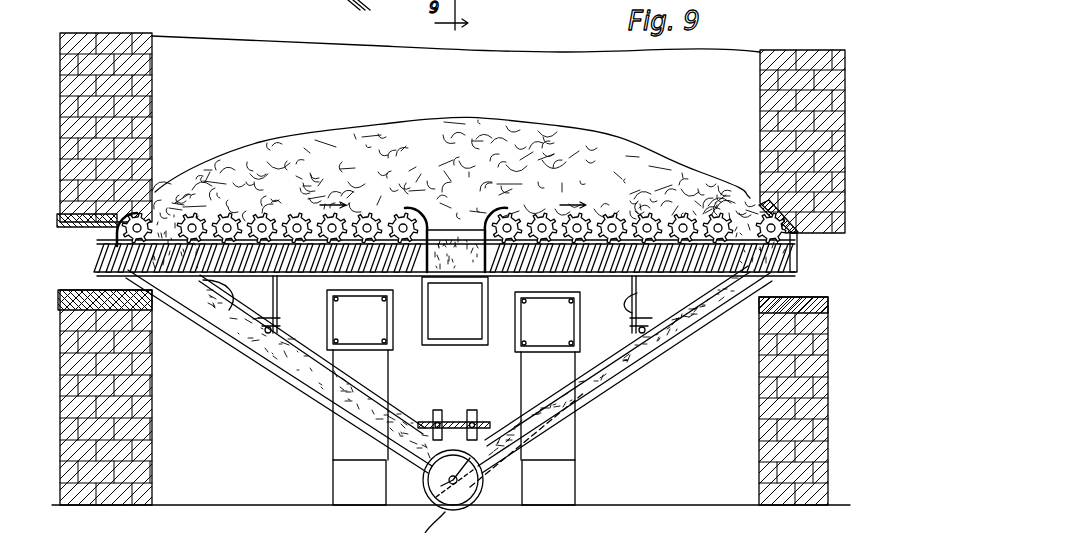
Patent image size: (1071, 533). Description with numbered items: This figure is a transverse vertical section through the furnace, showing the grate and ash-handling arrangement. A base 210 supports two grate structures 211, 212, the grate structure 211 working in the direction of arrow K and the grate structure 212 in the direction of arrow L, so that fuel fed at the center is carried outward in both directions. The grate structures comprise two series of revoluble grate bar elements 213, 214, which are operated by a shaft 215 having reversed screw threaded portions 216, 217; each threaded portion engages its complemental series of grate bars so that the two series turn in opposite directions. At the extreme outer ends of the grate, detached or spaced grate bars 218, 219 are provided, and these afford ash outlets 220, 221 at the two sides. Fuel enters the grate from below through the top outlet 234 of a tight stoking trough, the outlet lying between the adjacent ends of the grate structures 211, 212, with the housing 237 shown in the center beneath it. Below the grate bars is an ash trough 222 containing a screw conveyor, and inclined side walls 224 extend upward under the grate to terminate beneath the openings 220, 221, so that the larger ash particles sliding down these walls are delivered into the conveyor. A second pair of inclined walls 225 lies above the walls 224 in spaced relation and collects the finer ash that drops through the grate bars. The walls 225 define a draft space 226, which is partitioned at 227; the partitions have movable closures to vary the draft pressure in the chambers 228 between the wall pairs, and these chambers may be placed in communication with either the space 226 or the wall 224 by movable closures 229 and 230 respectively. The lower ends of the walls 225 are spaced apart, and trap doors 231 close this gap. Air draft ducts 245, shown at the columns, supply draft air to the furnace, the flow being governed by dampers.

The base 210 is at (787, 383).
The grate structure 211 is at (276, 225).
The grate structure 212 is at (563, 228).
The series of grate bar elements 213 is at (228, 215).
The series of grate bar elements 214 is at (660, 232).
The shaft 215 is at (456, 240).
The reversed screw threaded portion 216 is at (360, 315).
The reversed screw threaded portion 217 is at (584, 305).
The detached grate bar 218 is at (117, 212).
The detached grate bar 219 is at (797, 240).
The ash outlet 220 is at (165, 228).
The ash outlet 221 is at (752, 200).
The ash trough 222 is at (473, 500).
The inclined side wall 224 is at (322, 388).
The inclined wall 225 is at (390, 380).
The draft space 226 is at (430, 378).
The partition 227 is at (278, 285).
The chamber 228 is at (218, 322).
The movable closure 229 is at (272, 320).
The movable closure 230 is at (280, 331).
The trap door 231 is at (488, 420).
The top outlet 234 is at (466, 235).
The central housing 237 is at (455, 311).
The air draft duct 245 is at (340, 477).